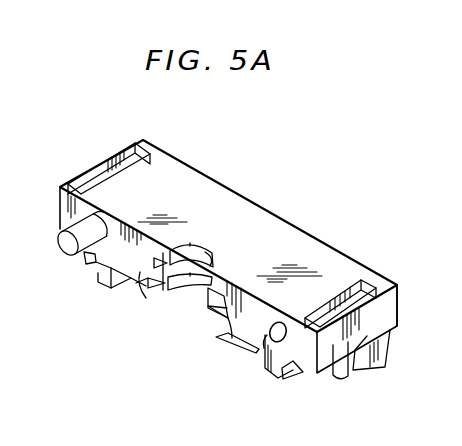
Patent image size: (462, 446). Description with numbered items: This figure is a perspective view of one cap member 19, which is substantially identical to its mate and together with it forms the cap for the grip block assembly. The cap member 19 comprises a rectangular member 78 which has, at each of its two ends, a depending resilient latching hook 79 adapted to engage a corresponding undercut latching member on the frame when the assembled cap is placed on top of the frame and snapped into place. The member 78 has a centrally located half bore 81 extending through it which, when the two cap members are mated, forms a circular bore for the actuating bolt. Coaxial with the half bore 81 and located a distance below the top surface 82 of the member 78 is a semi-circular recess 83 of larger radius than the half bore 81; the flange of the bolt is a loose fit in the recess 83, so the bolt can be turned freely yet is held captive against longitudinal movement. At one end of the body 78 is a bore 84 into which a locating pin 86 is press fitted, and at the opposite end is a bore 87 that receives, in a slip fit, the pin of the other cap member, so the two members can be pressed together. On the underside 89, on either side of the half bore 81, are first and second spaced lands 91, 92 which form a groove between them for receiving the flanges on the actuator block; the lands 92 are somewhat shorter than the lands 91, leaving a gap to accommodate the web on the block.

The cap member 19 is at (298, 253).
The rectangular member 78 is at (383, 313).
The resilient latching hook 79 is at (80, 266).
The half bore 81 is at (200, 243).
The top surface 82 is at (189, 213).
The semi-circular recess 83 is at (151, 265).
The bore 84 is at (99, 208).
The locating pin 86 is at (62, 254).
The bore 87 is at (258, 350).
The underside 89 is at (131, 279).
The first land 91 is at (108, 284).
The second land 92 is at (232, 338).